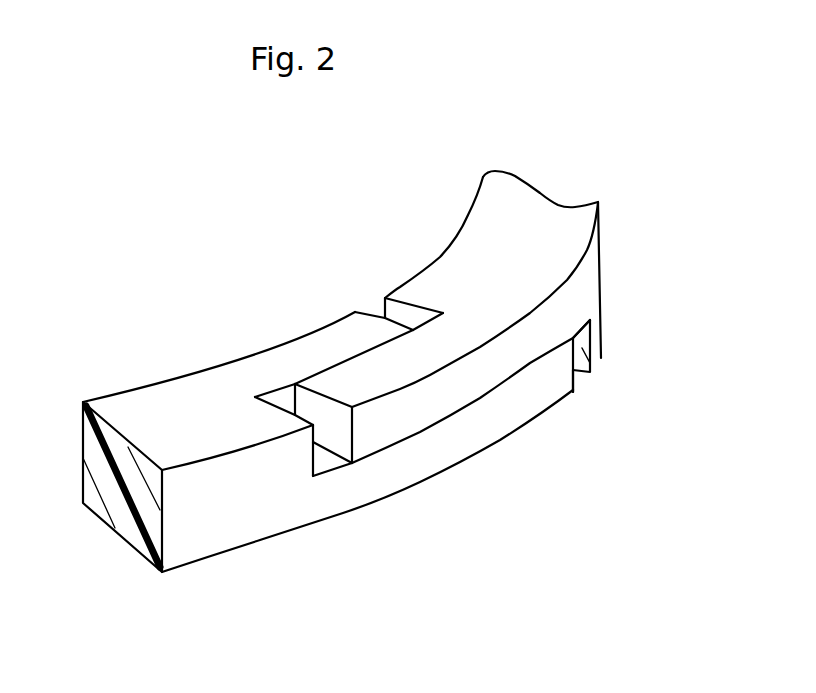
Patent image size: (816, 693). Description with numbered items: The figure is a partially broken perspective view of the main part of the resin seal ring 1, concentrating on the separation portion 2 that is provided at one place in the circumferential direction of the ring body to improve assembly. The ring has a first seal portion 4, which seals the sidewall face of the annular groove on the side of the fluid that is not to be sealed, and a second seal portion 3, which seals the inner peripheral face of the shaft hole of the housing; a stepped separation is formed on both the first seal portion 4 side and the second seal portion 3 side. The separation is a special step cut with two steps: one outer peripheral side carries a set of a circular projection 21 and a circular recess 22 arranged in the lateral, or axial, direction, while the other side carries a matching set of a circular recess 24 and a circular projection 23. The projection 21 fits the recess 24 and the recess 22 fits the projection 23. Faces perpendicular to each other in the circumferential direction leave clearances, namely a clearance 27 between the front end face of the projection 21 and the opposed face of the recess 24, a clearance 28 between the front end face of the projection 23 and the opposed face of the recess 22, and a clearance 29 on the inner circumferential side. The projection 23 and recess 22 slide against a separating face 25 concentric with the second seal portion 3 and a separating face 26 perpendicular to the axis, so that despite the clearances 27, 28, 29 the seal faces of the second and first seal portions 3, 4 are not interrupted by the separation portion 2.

The seal ring 1 is at (517, 207).
The separation portion 2 is at (518, 563).
The second seal portion 3 is at (197, 532).
The first seal portion 4 is at (157, 407).
The projection 21 is at (528, 397).
The recess 22 is at (320, 458).
The projection 23 is at (342, 387).
The recess 24 is at (601, 358).
The separating face 25 is at (357, 357).
The separating face 26 is at (432, 428).
The clearance 27 is at (580, 382).
The clearance 28 is at (275, 389).
The clearance 29 is at (370, 308).